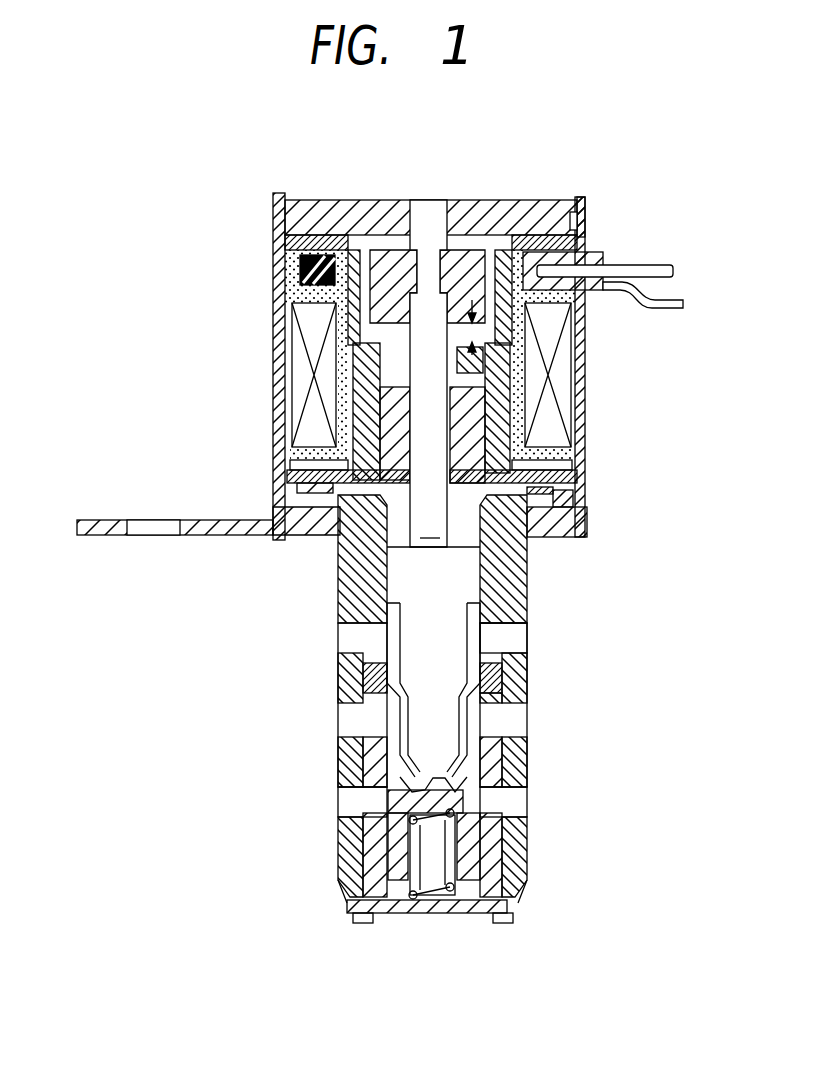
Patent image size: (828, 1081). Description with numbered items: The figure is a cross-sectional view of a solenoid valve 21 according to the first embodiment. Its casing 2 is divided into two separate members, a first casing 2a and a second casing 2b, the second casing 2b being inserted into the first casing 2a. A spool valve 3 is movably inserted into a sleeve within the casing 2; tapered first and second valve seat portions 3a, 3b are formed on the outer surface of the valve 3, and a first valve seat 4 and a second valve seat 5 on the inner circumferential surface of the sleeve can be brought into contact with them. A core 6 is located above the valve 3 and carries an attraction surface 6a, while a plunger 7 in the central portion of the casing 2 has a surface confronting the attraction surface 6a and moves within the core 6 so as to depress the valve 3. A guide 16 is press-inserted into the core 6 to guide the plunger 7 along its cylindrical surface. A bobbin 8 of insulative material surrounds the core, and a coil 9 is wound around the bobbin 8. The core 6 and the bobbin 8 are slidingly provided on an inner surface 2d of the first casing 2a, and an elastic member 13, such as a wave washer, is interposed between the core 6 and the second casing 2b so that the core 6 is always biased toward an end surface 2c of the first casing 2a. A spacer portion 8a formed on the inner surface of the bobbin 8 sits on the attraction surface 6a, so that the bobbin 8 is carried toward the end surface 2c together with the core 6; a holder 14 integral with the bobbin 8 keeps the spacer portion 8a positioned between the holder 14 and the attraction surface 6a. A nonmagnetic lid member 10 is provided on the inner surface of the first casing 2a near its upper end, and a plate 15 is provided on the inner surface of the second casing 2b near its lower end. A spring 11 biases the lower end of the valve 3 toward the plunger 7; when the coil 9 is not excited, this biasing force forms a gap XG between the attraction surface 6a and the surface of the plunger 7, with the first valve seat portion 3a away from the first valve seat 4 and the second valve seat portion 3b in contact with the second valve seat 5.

The casing 2 is at (590, 356).
The first casing 2a is at (583, 472).
The second casing 2b is at (527, 612).
The end surface 2c is at (578, 197).
The inner surface 2d is at (287, 353).
The spool valve 3 is at (410, 582).
The first valve seat portion 3a is at (382, 735).
The second valve seat portion 3b is at (505, 705).
The first valve seat 4 is at (502, 843).
The second valve seat 5 is at (505, 682).
The core 6 is at (362, 422).
The attraction surface 6a is at (403, 250).
The plunger 7 is at (462, 200).
The bobbin 8 is at (297, 453).
The spacer portion 8a is at (370, 236).
The coil 9 is at (572, 410).
The lid member 10 is at (316, 212).
The spring 11 is at (440, 912).
The elastic member 13 is at (550, 492).
The holder 14 is at (524, 200).
The plate 15 is at (472, 915).
The guide 16 is at (527, 545).
The solenoid valve 21 is at (622, 530).
The gap XG is at (500, 335).